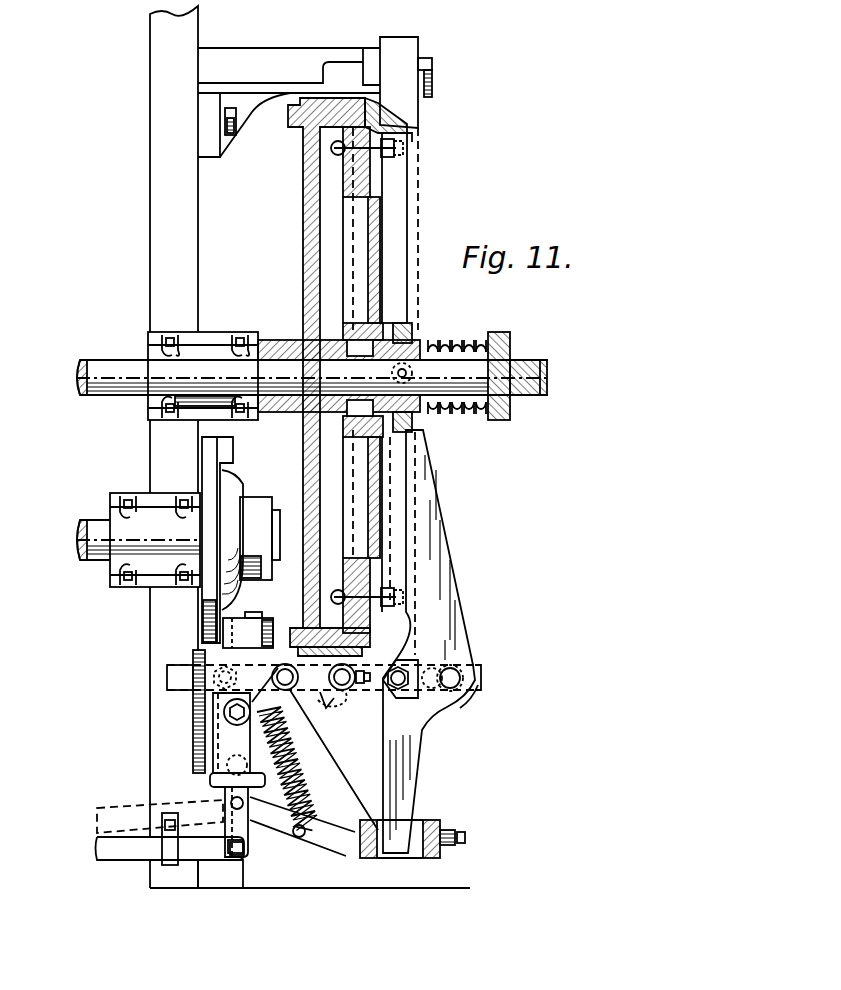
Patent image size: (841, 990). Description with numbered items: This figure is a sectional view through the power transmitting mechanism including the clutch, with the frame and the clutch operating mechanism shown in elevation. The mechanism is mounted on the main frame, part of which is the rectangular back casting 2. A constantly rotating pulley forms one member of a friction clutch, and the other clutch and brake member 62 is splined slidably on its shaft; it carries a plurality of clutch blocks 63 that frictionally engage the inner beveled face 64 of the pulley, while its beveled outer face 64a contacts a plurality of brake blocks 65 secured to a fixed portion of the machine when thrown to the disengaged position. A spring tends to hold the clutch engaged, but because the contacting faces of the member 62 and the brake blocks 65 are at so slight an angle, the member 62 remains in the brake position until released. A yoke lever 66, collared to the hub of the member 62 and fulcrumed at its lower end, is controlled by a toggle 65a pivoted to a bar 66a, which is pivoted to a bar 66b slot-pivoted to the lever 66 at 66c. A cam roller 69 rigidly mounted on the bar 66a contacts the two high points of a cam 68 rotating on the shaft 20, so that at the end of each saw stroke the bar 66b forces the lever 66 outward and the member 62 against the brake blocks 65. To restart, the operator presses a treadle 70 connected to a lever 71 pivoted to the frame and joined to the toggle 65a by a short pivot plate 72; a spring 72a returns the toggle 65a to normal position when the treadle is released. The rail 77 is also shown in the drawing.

The column 2 is at (160, 636).
The shaft 20 is at (82, 540).
The hub flange 62 is at (380, 222).
The block 63 is at (345, 172).
The wedge piece 64 is at (375, 108).
The wedge support 64a is at (405, 122).
The bracket block 65 is at (408, 50).
The pawl 65a is at (312, 706).
The lever 66 is at (452, 602).
The lever pivot 66a is at (380, 702).
The lever shoulder 66b is at (470, 702).
The lever pin 66c is at (458, 668).
The lever plate 68 is at (214, 478).
The cam block 69 is at (268, 618).
The liner strip 70 is at (346, 652).
The rod 71 is at (130, 852).
The shaft 72 is at (257, 837).
The spring 72a is at (468, 418).
The rail 77 is at (290, 118).